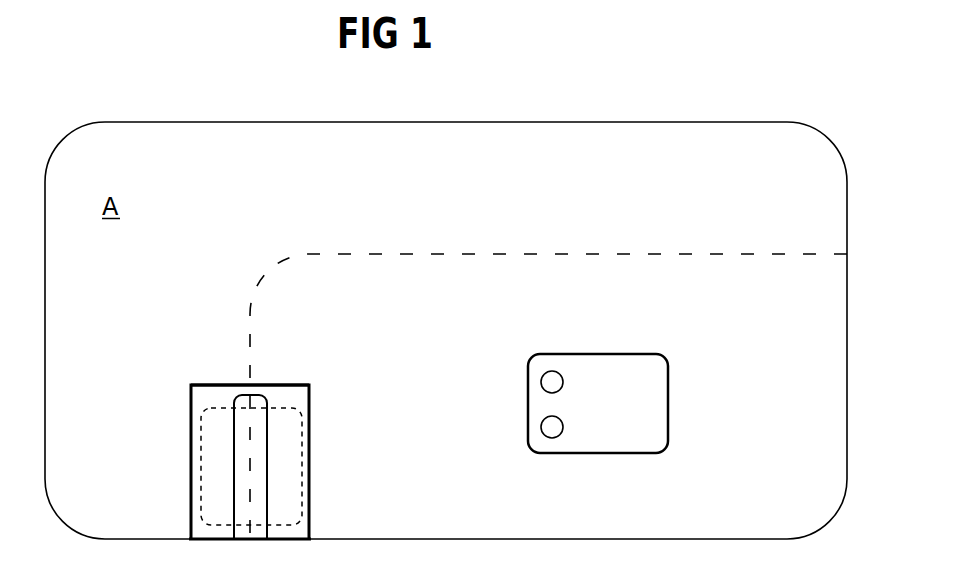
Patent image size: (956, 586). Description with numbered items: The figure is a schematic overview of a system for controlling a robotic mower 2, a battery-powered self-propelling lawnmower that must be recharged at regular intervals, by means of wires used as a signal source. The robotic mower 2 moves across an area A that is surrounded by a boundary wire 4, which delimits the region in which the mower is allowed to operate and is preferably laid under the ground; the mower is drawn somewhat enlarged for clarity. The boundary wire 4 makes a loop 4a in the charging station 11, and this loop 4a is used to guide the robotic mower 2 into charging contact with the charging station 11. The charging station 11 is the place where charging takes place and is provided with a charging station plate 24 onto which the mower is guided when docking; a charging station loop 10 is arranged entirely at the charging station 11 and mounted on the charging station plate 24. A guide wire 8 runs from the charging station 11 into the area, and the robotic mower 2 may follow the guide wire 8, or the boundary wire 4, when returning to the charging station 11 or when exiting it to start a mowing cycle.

The robotic mower 2 is at (660, 393).
The boundary wire 4 is at (250, 121).
The loop 4a is at (267, 433).
The guide wire 8 is at (462, 253).
The charging station loop 10 is at (301, 498).
The charging station 11 is at (208, 385).
The charging station plate 24 is at (203, 400).